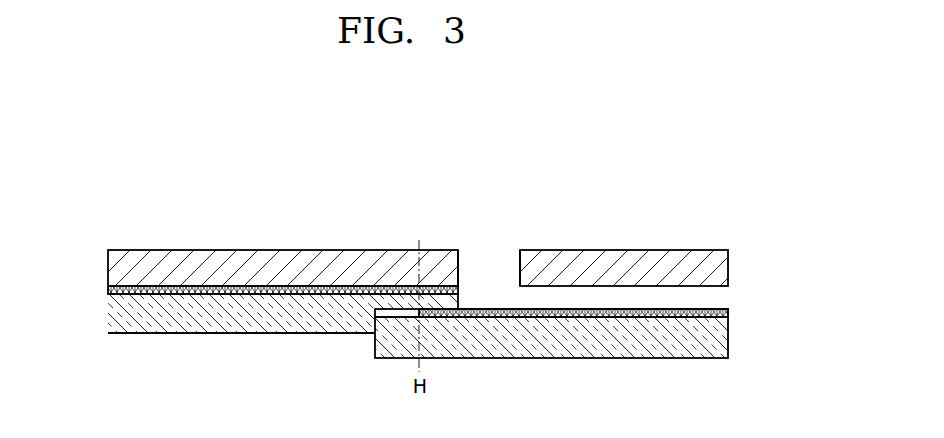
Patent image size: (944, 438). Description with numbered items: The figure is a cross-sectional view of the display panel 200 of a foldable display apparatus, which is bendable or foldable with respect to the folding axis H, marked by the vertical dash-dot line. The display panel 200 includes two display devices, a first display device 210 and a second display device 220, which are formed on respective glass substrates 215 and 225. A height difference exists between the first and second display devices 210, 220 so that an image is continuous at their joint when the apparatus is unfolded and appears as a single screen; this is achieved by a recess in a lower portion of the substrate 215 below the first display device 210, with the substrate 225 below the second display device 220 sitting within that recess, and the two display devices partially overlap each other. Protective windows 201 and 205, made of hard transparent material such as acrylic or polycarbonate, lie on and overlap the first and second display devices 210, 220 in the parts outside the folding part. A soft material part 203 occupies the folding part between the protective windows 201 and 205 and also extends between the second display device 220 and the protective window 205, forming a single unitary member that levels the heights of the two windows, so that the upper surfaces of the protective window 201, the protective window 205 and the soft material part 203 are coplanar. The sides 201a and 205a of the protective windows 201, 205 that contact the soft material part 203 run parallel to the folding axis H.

The display panel 200 is at (93, 214).
The protective window 201 is at (113, 265).
The side of protective window 201a is at (460, 252).
The soft material part 203 is at (493, 257).
The protective window 205 is at (728, 272).
The side of protective window 205a is at (513, 252).
The first display device 210 is at (112, 290).
The substrate 215 is at (114, 313).
The second display device 220 is at (728, 315).
The substrate 225 is at (725, 338).